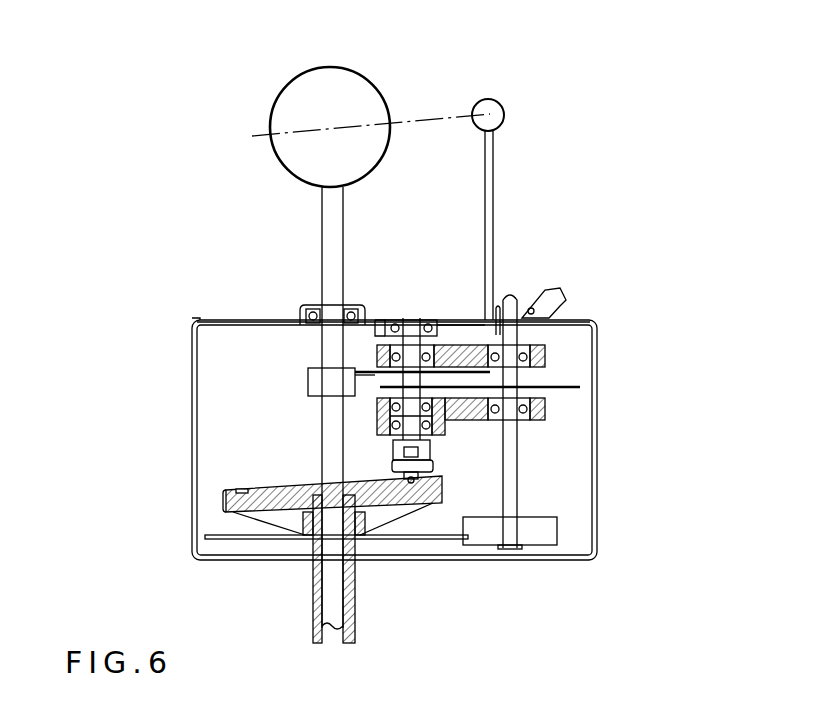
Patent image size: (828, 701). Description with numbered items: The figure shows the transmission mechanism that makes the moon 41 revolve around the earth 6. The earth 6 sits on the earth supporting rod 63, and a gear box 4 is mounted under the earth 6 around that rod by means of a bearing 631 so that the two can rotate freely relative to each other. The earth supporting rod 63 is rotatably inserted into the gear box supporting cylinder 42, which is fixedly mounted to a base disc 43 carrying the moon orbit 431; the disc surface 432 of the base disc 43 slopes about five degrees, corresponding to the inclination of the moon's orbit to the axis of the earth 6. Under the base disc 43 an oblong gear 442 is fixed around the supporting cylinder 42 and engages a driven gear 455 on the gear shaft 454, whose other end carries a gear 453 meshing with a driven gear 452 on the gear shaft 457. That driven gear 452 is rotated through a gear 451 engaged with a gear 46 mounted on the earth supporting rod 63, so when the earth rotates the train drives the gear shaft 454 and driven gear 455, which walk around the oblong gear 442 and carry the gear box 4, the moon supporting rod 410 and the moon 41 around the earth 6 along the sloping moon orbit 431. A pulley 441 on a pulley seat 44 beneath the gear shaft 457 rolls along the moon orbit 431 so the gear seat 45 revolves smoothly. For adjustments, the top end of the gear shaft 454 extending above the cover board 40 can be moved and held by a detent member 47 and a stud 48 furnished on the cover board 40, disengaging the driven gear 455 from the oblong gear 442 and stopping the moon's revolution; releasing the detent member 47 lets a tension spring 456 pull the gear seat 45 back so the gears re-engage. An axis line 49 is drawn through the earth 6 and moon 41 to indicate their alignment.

The gear box 4 is at (597, 432).
The earth 6 is at (375, 107).
The cover board 40 is at (262, 320).
The moon 41 is at (497, 105).
The gear box supporting cylinder 42 is at (352, 612).
The base disc 43 is at (305, 490).
The pulley seat 44 is at (430, 452).
The gear seat 45 is at (545, 410).
The gear 46 is at (308, 378).
The detent member 47 is at (548, 296).
The stud 48 is at (498, 305).
The axis line 49 is at (257, 136).
The earth supporting rod 63 is at (343, 232).
The moon supporting rod 410 is at (490, 196).
The moon orbit 431 is at (242, 490).
The disc surface 432 is at (272, 490).
The pulley 441 is at (432, 481).
The oblong gear 442 is at (420, 539).
The gear 451 is at (372, 382).
The driven gear 452 is at (380, 372).
The gear 453 is at (570, 387).
The gear shaft 454 is at (515, 300).
The driven gear 455 is at (550, 527).
The tension spring 456 is at (450, 326).
The gear shaft 457 is at (412, 318).
The bearing 631 is at (312, 310).